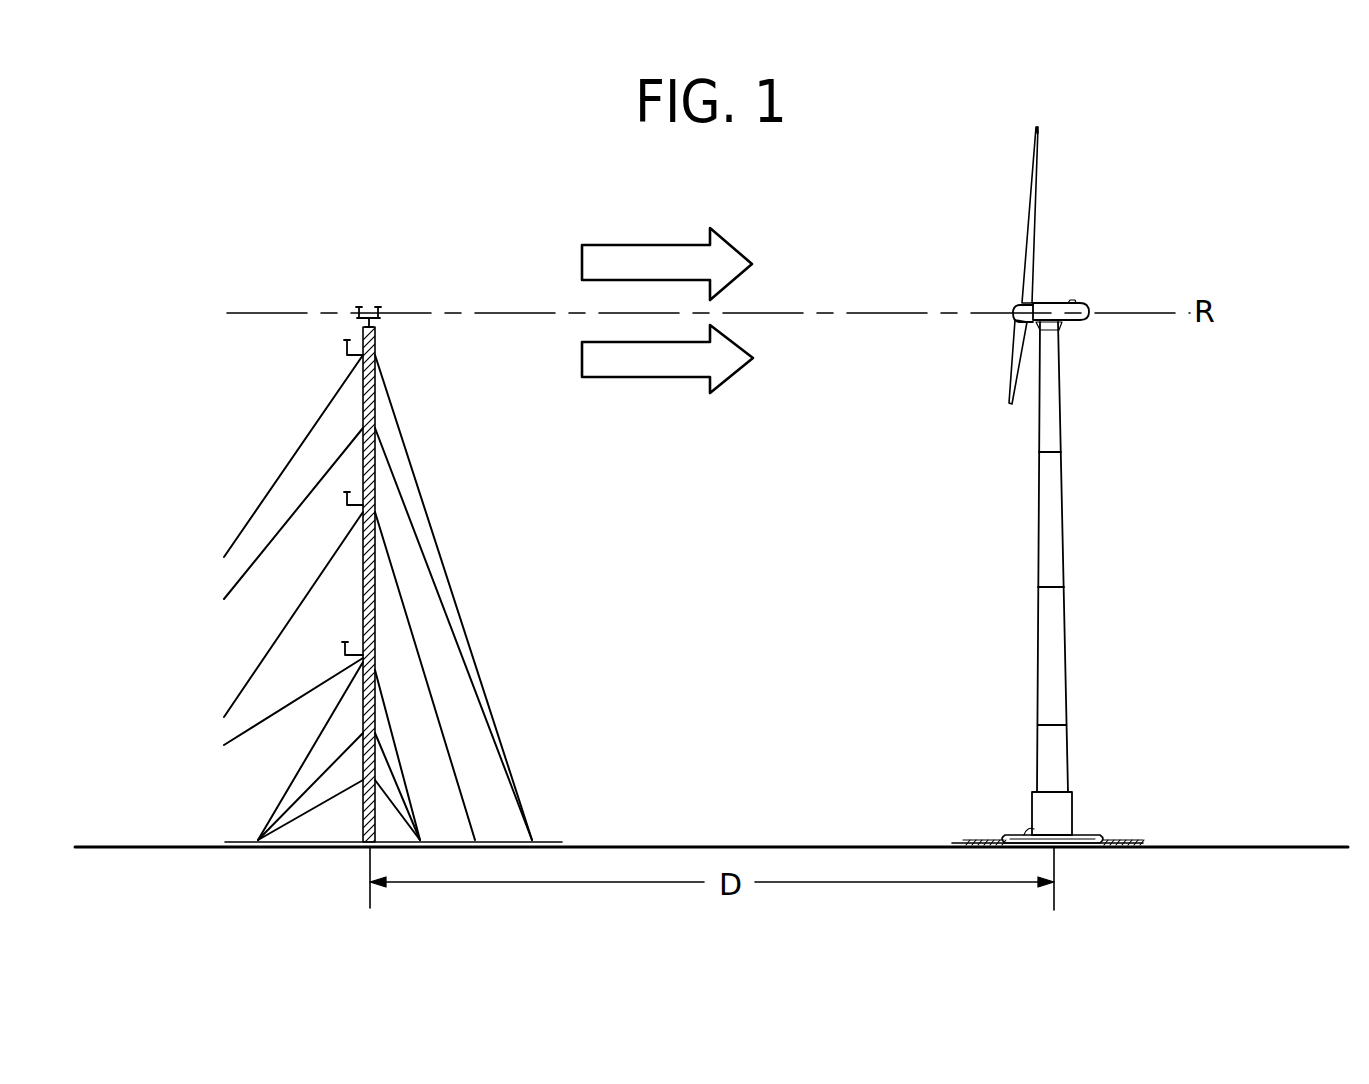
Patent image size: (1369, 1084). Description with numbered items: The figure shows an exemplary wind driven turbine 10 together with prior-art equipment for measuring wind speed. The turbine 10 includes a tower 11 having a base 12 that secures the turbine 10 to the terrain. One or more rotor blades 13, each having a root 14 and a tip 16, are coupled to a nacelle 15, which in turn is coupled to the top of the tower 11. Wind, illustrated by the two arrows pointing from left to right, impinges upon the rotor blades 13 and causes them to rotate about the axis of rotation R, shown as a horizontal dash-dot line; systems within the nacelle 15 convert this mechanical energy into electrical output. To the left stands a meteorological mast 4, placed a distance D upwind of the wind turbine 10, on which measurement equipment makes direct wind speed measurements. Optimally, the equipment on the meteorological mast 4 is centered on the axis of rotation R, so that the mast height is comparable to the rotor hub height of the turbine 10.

The meteorological mast 4 is at (376, 338).
The wind driven turbine 10 is at (1125, 481).
The tower 11 is at (1065, 500).
The base 12 is at (1083, 835).
The rotor blades 13 is at (1024, 220).
The root 14 is at (1027, 284).
The nacelle 15 is at (1082, 322).
The tip 16 is at (1039, 130).